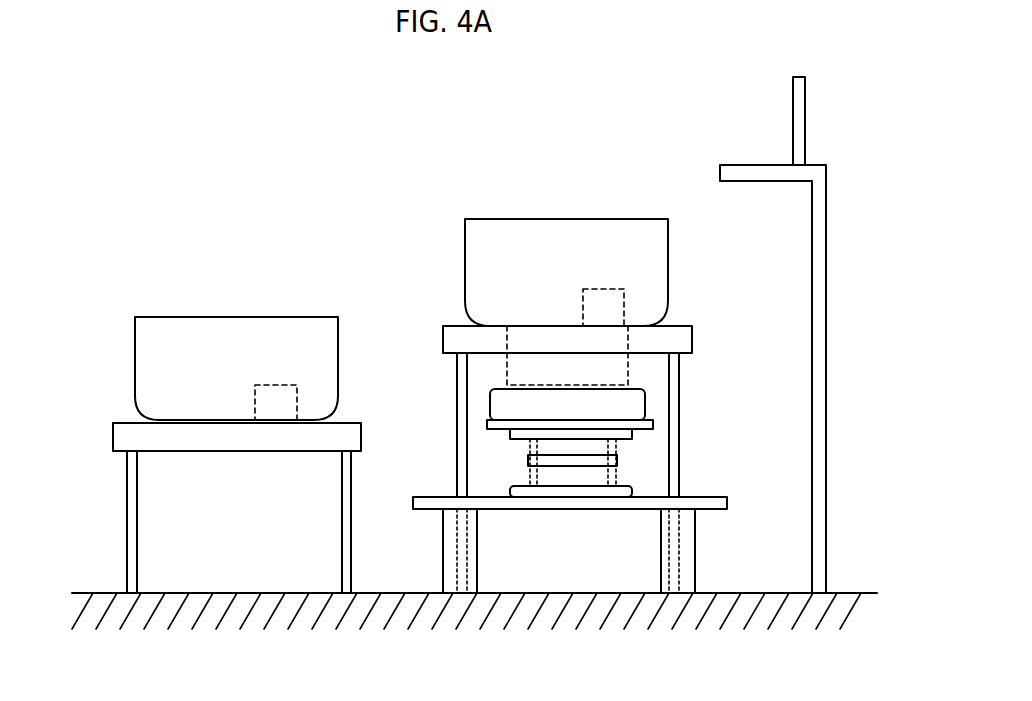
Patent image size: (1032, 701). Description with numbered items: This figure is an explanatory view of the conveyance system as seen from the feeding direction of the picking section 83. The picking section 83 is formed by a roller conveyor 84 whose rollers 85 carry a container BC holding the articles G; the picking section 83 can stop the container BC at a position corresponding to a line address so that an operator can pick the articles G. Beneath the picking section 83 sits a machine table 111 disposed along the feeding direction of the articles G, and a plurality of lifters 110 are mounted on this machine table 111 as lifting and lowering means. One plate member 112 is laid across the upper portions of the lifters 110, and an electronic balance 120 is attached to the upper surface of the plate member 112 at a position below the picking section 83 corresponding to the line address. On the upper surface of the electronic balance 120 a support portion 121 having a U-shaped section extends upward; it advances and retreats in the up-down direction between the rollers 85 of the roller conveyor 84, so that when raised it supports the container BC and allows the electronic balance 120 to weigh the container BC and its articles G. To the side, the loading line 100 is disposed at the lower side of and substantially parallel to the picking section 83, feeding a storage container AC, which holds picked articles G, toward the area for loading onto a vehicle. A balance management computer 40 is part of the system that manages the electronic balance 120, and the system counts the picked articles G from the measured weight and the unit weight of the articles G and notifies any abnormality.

The balance management computer 40 is at (805, 136).
The picking section 83 is at (380, 232).
The roller conveyor 84 is at (694, 333).
The rollers 85 is at (562, 340).
The loading line 100 is at (126, 539).
The lifter 110 is at (617, 458).
The machine table 111 is at (695, 548).
The plate member 112 is at (653, 424).
The electronic balance 120 is at (645, 393).
The support portion 121 is at (518, 369).
The storage container AC is at (210, 317).
The container BC is at (538, 218).
The article G is at (283, 385).